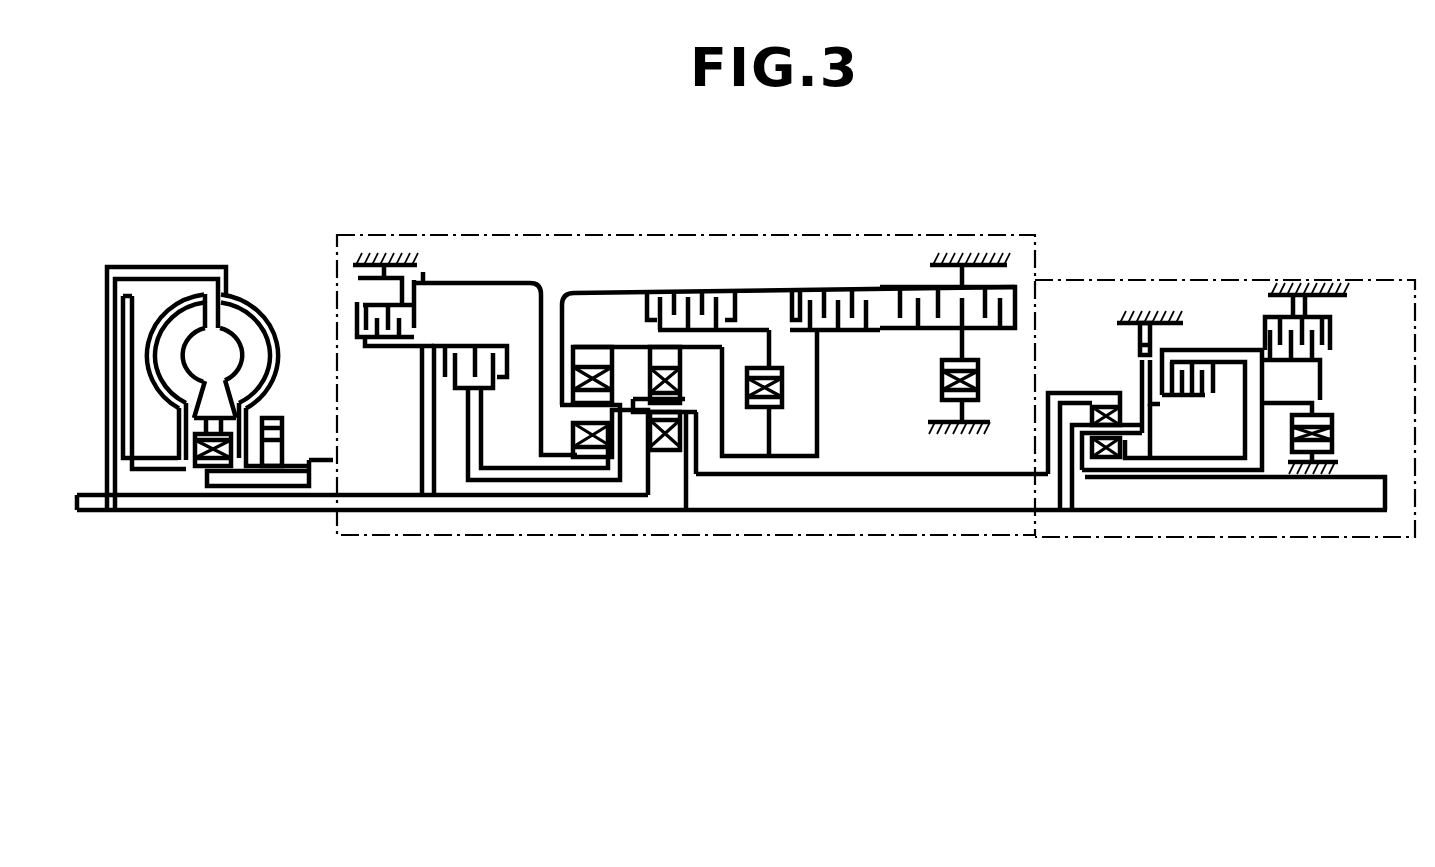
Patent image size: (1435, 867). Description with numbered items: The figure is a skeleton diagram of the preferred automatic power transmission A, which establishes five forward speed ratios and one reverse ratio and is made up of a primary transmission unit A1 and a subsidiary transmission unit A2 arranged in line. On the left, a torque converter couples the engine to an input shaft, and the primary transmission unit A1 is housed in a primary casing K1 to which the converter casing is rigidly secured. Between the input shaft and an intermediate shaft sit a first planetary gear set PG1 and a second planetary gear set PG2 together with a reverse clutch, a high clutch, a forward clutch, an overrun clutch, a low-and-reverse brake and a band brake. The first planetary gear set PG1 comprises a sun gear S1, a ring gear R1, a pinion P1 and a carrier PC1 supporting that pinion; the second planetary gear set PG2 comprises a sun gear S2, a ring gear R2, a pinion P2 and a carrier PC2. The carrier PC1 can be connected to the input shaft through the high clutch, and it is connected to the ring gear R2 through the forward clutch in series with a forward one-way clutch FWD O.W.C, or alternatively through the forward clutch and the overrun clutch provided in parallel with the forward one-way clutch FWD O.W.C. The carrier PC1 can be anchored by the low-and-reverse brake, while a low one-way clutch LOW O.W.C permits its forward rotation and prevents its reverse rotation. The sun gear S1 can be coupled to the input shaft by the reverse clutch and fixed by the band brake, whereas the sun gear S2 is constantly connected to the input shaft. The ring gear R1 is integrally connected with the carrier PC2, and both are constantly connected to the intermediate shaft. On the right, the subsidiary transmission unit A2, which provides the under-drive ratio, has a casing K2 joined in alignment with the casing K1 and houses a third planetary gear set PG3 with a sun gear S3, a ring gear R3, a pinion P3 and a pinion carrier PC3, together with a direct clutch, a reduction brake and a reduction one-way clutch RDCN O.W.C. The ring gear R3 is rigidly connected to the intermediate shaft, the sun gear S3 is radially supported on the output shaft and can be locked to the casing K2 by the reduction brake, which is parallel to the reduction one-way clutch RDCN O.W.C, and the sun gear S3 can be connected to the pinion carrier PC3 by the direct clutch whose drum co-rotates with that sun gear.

The automatic power transmission A is at (430, 146).
The primary transmission unit A1 is at (874, 222).
The subsidiary transmission unit A2 is at (1372, 266).
The primary transmission casing K1 is at (357, 252).
The first planetary gear set PG1 is at (583, 328).
The ring gear R1 is at (596, 352).
The pinion P1 is at (595, 418).
The sun gear S1 is at (583, 459).
The carrier PC1 is at (624, 471).
The second planetary gear set PG2 is at (673, 331).
The ring gear R2 is at (657, 352).
The pinion P2 is at (672, 418).
The sun gear S2 is at (663, 458).
The carrier PC2 is at (700, 458).
The forward one-way clutch FWD O.W.C is at (772, 405).
The low one-way clutch LOW O.W.C is at (980, 385).
The third planetary gear set PG3 is at (1057, 378).
The ring gear R3 is at (1101, 400).
The pinion P3 is at (1097, 440).
The sun gear S3 is at (1113, 464).
The pinion carrier PC3 is at (1148, 438).
The subsidiary transmission casing K2 is at (1142, 318).
The reduction one-way clutch RDCN O.W.C is at (1313, 464).